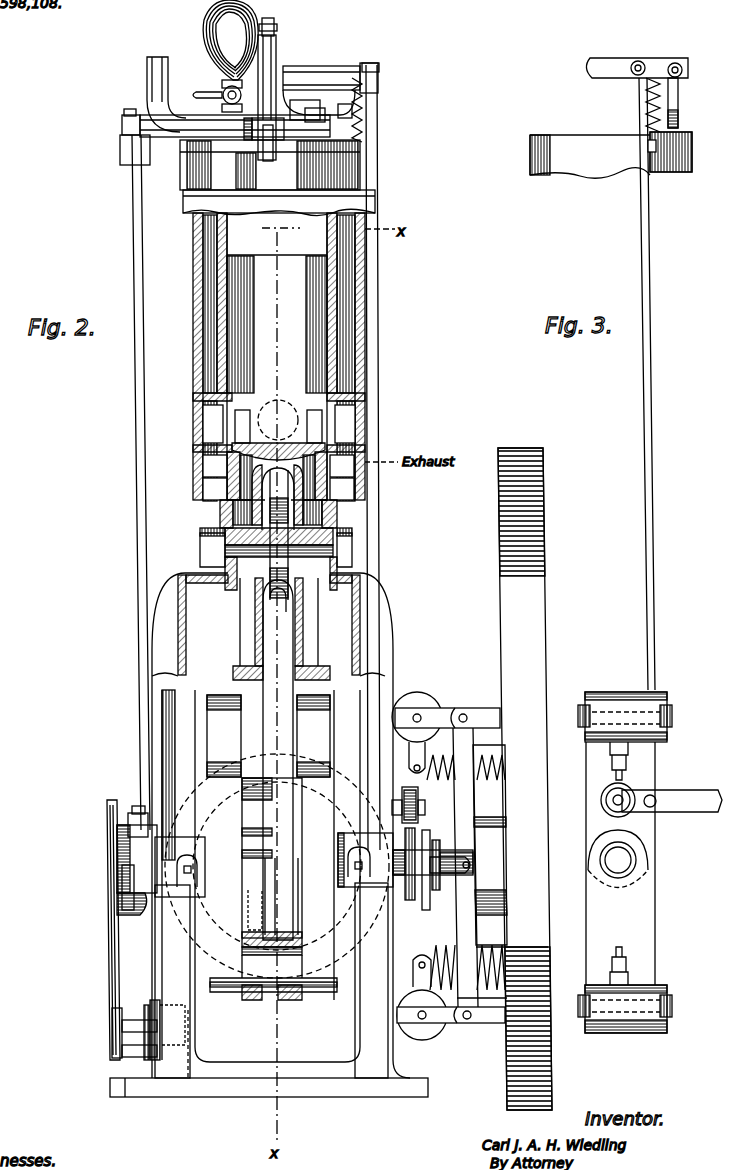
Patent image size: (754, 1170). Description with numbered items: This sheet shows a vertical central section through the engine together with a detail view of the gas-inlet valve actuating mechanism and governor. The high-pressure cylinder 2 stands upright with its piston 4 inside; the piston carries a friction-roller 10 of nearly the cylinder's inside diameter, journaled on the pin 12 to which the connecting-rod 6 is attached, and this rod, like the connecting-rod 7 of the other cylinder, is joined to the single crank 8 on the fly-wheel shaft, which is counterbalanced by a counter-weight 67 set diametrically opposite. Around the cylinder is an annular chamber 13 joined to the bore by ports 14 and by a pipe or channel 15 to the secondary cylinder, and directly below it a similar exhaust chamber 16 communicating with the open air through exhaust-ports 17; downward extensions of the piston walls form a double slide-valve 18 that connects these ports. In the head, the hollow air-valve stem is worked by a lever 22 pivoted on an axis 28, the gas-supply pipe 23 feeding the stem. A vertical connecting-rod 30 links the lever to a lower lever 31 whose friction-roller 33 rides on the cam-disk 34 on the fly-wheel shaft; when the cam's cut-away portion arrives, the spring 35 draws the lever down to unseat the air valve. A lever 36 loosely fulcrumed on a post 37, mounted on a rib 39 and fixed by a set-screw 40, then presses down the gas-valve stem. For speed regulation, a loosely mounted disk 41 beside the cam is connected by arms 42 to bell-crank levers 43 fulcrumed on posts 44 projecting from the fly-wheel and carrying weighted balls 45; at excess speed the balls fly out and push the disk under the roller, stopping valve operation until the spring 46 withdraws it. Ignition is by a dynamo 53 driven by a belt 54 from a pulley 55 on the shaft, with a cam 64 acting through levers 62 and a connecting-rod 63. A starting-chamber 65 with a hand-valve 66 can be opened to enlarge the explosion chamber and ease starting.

In FIG. 2, the high-pressure cylinder 2 is at (277, 320).
In FIG. 2, the piston 4 is at (278, 450).
In FIG. 2, the connecting-rod 6 is at (278, 760).
In FIG. 2, the connecting-rod 7 is at (277, 866).
In FIG. 2, the crank 8 is at (273, 966).
In FIG. 2, the friction-roller 10 is at (278, 534).
In FIG. 2, the pin 12 is at (276, 559).
In FIG. 2, the annular chamber 13 is at (279, 428).
In FIG. 2, the ports 14 is at (280, 426).
In FIG. 2, the pipe or channel 15 is at (278, 420).
In FIG. 2, the exhaust chamber 16 is at (278, 489).
In FIG. 2, the exhaust-ports 17 is at (336, 460).
In FIG. 2, the double slide-valve 18 is at (281, 624).
In FIG. 2, the lever 22 is at (330, 87).
In FIG. 3, the lever 22 is at (605, 72).
In FIG. 2, the gas-supply pipe 23 is at (168, 94).
In FIG. 3, the axis 28 is at (680, 68).
In FIG. 2, the connecting-rod 30 is at (380, 390).
In FIG. 3, the connecting-rod 30 is at (657, 384).
In FIG. 3, the lever 31 is at (672, 801).
In FIG. 3, the friction-roller 33 is at (614, 793).
In FIG. 2, the cam-disk 34 is at (410, 903).
In FIG. 3, the cam-disk 34 is at (620, 900).
In FIG. 3, the spring 35 is at (660, 122).
In FIG. 2, the lever 36 is at (273, 33).
In FIG. 2, the post 37 is at (268, 97).
In FIG. 2, the rib 39 is at (266, 152).
In FIG. 2, the set-screw 40 is at (247, 140).
In FIG. 2, the disk 41 is at (425, 905).
In FIG. 3, the disk 41 is at (617, 851).
In FIG. 2, the arms 42 is at (450, 865).
In FIG. 2, the bell-crank levers 43 is at (452, 713).
In FIG. 3, the bell-crank levers 43 is at (585, 795).
In FIG. 2, the posts 44 is at (472, 865).
In FIG. 2, the weighted balls 45 is at (415, 708).
In FIG. 3, the weighted balls 45 is at (626, 1045).
In FIG. 2, the spring 46 is at (487, 871).
In FIG. 2, the dynamo 53 is at (115, 1015).
In FIG. 2, the belt 54 is at (158, 965).
In FIG. 2, the pulley 55 is at (115, 905).
In FIG. 2, the levers 62 is at (130, 815).
In FIG. 2, the connecting-rod 63 is at (136, 562).
In FIG. 2, the cam 64 is at (140, 905).
In FIG. 2, the starting-chamber 65 is at (230, 40).
In FIG. 2, the hand-valve 66 is at (217, 93).
In FIG. 2, the counter-weight 67 is at (268, 736).